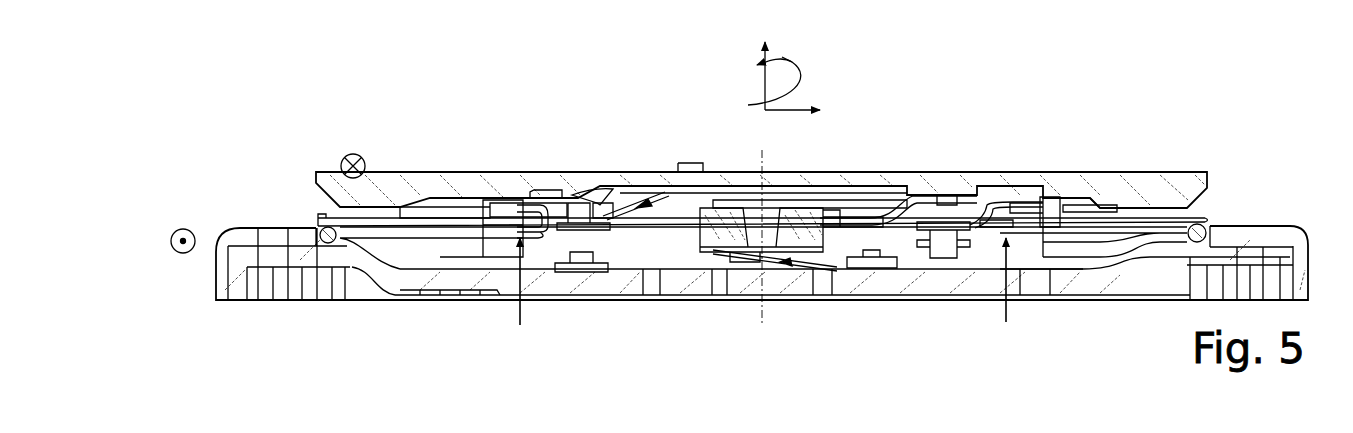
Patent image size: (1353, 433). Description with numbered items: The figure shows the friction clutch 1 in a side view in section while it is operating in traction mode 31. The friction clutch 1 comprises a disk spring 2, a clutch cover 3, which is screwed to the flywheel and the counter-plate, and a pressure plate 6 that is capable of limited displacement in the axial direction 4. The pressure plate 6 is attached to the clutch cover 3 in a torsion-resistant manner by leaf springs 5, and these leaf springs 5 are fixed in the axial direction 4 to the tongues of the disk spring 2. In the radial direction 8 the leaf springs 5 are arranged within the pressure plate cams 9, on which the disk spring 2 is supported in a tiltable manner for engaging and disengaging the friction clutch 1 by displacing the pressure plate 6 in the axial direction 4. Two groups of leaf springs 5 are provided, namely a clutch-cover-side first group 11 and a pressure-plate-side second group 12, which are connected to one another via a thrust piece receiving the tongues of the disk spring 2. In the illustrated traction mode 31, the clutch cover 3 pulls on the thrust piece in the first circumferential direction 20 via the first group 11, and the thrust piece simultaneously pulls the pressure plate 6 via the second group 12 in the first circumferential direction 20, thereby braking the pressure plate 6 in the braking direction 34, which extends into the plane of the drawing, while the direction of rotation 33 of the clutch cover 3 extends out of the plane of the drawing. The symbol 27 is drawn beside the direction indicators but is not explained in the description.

The friction clutch 1 is at (1157, 138).
The disk spring 2 is at (322, 214).
The clutch cover 3 is at (353, 298).
The axial direction 4 is at (765, 62).
The leaf springs 5 is at (631, 190).
The pressure plate 6 is at (403, 182).
The radial direction 8 is at (806, 114).
The pressure plate cams 9 is at (408, 296).
The first group 11 is at (843, 288).
The second group 12 is at (912, 186).
The first circumferential direction 20 is at (792, 82).
The rotation axis 27 is at (782, 57).
The traction mode 31 is at (1085, 122).
The direction of rotation 33 is at (183, 228).
The braking direction 34 is at (355, 154).